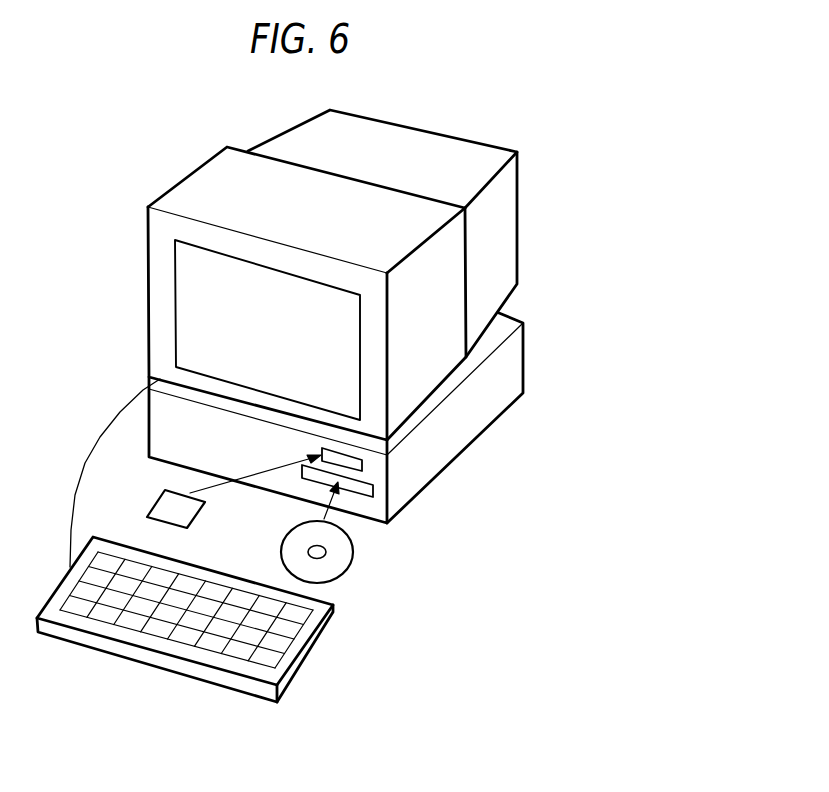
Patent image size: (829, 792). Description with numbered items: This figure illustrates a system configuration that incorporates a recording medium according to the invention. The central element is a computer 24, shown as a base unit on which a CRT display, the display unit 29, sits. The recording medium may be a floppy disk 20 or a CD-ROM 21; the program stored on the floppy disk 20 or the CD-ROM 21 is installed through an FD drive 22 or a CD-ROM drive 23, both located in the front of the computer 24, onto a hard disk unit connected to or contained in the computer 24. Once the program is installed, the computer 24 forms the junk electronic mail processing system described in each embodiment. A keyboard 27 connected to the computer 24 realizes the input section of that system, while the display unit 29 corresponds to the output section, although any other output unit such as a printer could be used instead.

The CRT display (display unit) 29 is at (288, 140).
The computer 24 is at (482, 415).
The FD drive 22 is at (362, 465).
The CD-ROM drive 23 is at (373, 494).
The floppy disk 20 is at (192, 513).
The CD-ROM 21 is at (353, 558).
The keyboard 27 is at (192, 655).